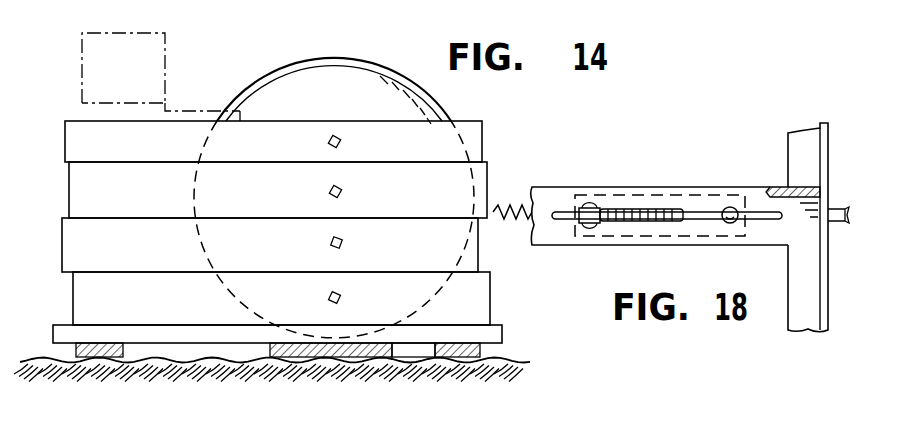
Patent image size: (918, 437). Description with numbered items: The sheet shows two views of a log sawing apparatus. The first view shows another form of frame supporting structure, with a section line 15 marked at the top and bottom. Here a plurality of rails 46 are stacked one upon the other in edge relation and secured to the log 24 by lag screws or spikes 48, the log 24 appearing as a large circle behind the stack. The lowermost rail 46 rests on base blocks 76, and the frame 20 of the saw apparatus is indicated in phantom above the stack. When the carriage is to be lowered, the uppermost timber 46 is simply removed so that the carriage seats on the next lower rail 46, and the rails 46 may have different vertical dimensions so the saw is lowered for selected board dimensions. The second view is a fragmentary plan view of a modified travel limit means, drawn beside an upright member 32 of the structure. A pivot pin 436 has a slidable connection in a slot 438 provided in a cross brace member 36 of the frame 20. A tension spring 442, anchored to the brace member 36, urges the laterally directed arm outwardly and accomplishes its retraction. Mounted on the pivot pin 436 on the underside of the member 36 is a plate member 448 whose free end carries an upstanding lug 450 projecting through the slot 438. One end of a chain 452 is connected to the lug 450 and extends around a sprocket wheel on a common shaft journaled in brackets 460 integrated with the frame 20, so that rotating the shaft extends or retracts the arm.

In FIG. 14, the section line 15— 15 is at (32, 88).
In FIG. 14, the frame 20 is at (167, 42).
In FIG. 14, the log 24 is at (381, 86).
In FIG. 14, the rails 46 is at (487, 185).
In FIG. 14, the lag screws or spikes 48 is at (330, 188).
In FIG. 14, the base blocks 76 is at (413, 337).
In FIG. 18, the upright post 32 is at (801, 141).
In FIG. 18, the cross brace member 36 is at (560, 196).
In FIG. 18, the tension spring 442 is at (509, 222).
In FIG. 18, the slot 438 is at (762, 221).
In FIG. 18, the upstanding lug 450 is at (596, 206).
In FIG. 18, the plate member 448 is at (652, 194).
In FIG. 18, the pivot pin 436 is at (729, 207).
In FIG. 18, the brackets 460 is at (773, 188).
In FIG. 18, the chain 452 is at (643, 222).